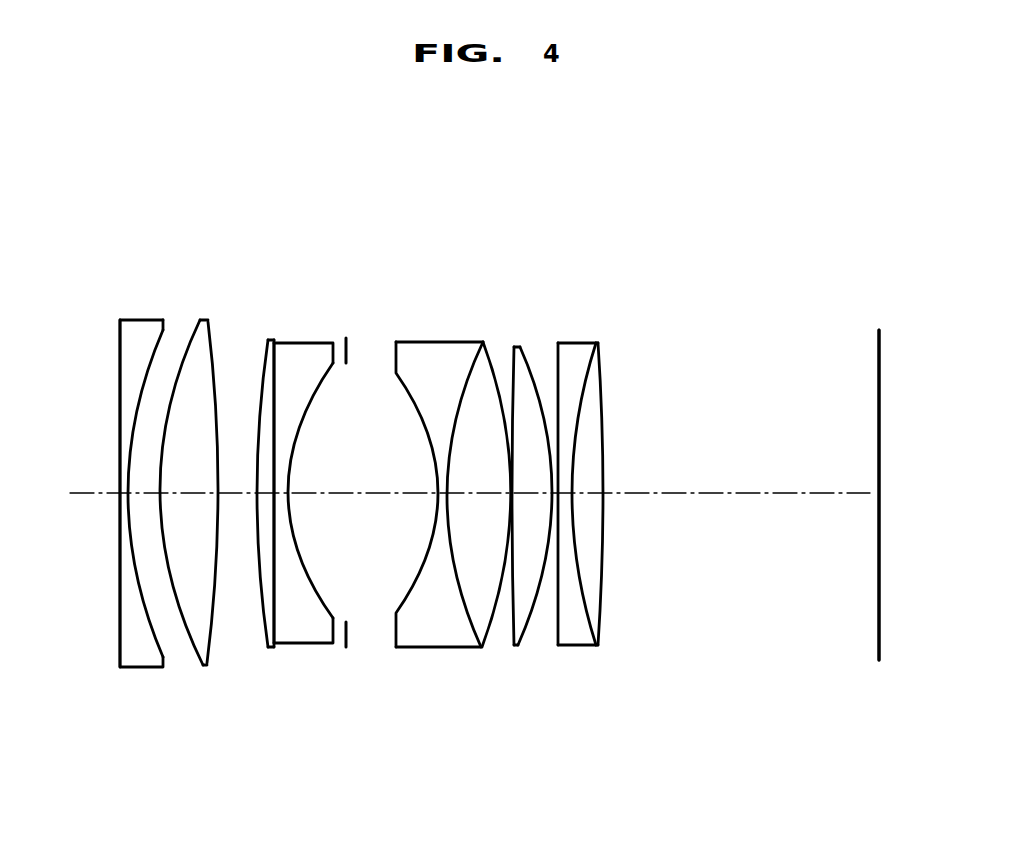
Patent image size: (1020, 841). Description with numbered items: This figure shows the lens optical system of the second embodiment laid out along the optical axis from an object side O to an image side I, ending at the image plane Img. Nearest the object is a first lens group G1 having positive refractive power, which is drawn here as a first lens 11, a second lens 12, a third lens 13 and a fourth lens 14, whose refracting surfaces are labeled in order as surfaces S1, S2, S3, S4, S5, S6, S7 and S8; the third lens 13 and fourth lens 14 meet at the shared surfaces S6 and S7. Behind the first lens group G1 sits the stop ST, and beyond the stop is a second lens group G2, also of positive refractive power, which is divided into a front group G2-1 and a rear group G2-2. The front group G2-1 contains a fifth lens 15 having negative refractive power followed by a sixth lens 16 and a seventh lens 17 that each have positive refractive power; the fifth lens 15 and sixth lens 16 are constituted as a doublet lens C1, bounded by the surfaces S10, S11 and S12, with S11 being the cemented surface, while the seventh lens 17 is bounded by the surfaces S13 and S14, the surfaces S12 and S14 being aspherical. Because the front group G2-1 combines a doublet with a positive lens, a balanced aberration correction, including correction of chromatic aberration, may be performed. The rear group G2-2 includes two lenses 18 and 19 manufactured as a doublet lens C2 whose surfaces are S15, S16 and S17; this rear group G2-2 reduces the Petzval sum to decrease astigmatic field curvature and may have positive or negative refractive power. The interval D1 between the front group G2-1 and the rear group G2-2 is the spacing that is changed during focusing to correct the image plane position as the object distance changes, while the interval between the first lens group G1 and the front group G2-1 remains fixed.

The first lens 11 is at (112, 529).
The second lens 12 is at (176, 501).
The third lens 13 is at (266, 506).
The fourth lens 14 is at (319, 540).
The fifth lens 15 is at (421, 518).
The sixth lens 16 is at (470, 510).
The seventh lens 17 is at (535, 510).
The lens of rear group 18 is at (612, 509).
The lens of rear group 19 is at (637, 540).
The first lens group G1 is at (338, 203).
The second lens group G2 is at (580, 205).
The front group G2-1 is at (528, 265).
The rear group G2-2 is at (610, 265).
The doublet lens C1 is at (488, 738).
The doublet lens C2 is at (627, 738).
The stop ST is at (346, 647).
The interval D1 is at (558, 524).
The object side O is at (453, 495).
The image side I is at (892, 495).
The image plane Img is at (878, 517).
The lens surface S1 is at (118, 365).
The lens surface S2 is at (137, 407).
The lens surface S3 is at (166, 322).
The lens surface S4 is at (215, 322).
The lens surface S5 is at (257, 350).
The lens surface S6 is at (276, 350).
The lens surface S7 is at (277, 420).
The lens surface S8 is at (292, 460).
The lens surface S10 is at (408, 403).
The lens surface S11 is at (448, 435).
The lens surface S12 is at (486, 364).
The lens surface S13 is at (508, 375).
The lens surface S14 is at (530, 368).
The lens surface S15 is at (568, 368).
The lens surface S16 is at (592, 386).
The lens surface S17 is at (603, 418).